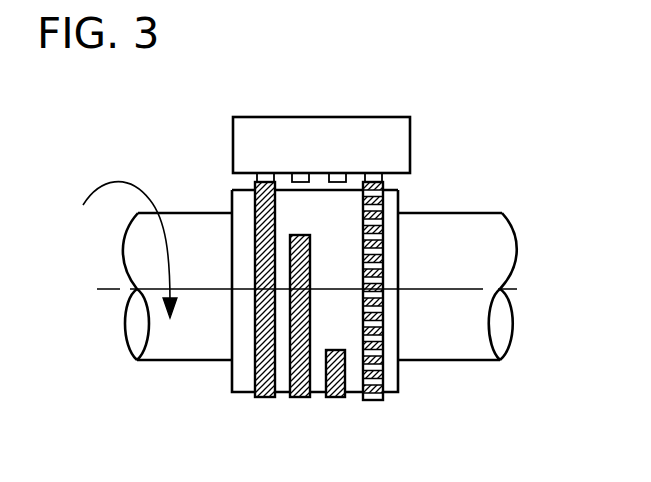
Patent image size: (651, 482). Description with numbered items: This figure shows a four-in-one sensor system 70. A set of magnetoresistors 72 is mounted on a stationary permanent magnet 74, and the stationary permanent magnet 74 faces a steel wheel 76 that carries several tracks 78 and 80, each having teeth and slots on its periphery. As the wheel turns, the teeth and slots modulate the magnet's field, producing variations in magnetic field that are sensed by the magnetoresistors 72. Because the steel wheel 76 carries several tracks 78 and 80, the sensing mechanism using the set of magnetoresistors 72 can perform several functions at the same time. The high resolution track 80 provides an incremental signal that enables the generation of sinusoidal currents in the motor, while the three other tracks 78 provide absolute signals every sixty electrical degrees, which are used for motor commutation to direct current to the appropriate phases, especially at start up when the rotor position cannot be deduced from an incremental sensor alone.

The four-in-one sensor system 70 is at (489, 136).
The magnetoresistors 72 is at (385, 177).
The stationary permanent magnet 74 is at (330, 157).
The steel wheel 76 is at (397, 380).
The tracks 78 is at (355, 403).
The high resolution track 80 is at (372, 398).